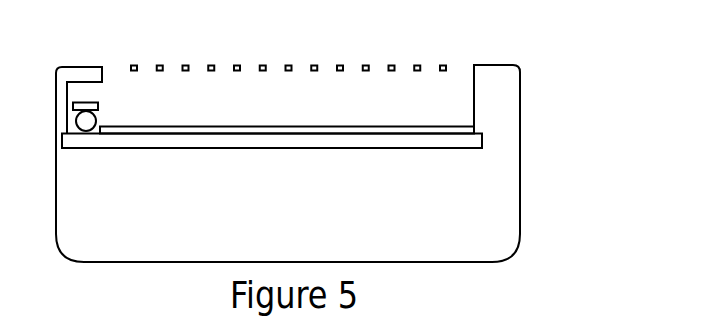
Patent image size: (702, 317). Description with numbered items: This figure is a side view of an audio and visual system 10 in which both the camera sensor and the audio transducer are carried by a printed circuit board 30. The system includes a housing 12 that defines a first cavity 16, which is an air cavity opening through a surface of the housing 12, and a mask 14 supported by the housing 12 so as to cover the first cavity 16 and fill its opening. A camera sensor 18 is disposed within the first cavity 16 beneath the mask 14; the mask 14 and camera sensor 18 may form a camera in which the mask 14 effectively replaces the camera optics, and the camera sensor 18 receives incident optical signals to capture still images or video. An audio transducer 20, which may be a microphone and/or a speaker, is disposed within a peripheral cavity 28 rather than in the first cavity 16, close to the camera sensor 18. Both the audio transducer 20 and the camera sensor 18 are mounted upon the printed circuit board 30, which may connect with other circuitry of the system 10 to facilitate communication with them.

The audio and visual system 10 is at (528, 43).
The housing 12 is at (510, 87).
The mask 14 is at (363, 63).
The first cavity 16 is at (437, 103).
The camera sensor 18 is at (350, 128).
The audio transducer 20 is at (88, 119).
The peripheral cavity 28 is at (87, 93).
The printed circuit board 30 is at (392, 142).